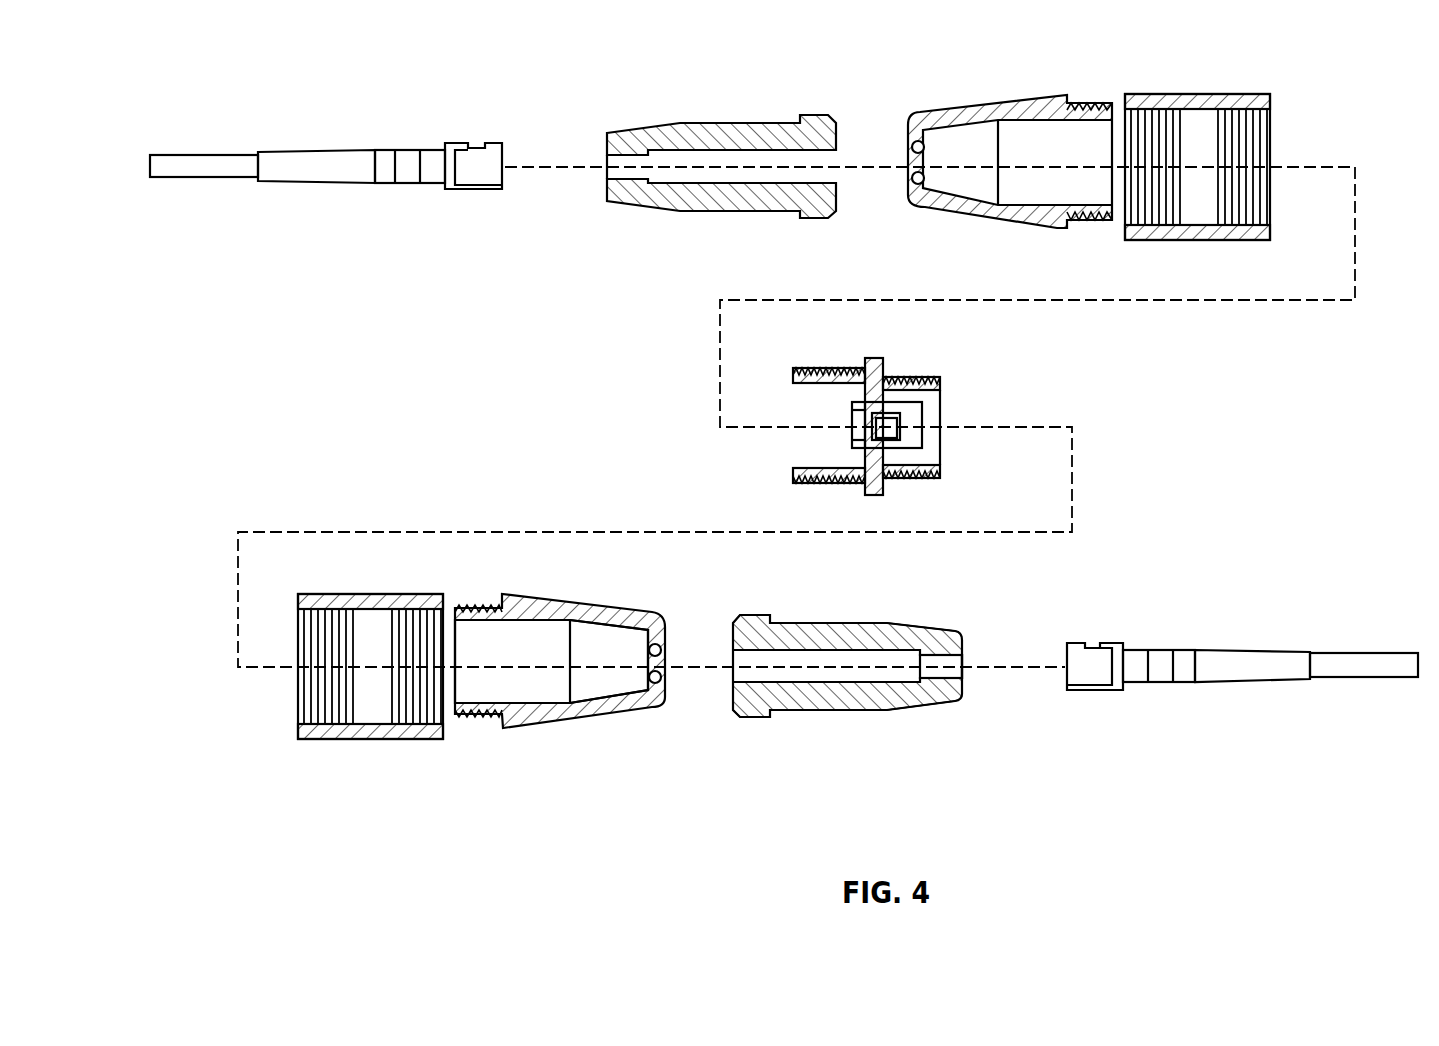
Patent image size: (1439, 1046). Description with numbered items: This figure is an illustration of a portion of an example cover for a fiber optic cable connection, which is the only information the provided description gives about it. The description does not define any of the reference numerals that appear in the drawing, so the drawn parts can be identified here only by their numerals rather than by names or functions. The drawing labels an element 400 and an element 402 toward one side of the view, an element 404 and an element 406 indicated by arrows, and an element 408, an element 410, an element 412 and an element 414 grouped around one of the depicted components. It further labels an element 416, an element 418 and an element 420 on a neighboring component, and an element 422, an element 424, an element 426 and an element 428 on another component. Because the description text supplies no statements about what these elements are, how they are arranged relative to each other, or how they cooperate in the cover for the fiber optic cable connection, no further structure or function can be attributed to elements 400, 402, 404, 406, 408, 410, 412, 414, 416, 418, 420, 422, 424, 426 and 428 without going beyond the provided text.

The fiber optic cable 400 is at (1240, 662).
The fiber optic connector 402 is at (1090, 662).
The connector assembly 404 is at (355, 472).
The coupling nut 406 is at (340, 622).
The nut bore 408 is at (395, 595).
The internal threads 410 is at (423, 595).
The internal threads 412 is at (360, 730).
The nut end wall 414 is at (427, 730).
The housing body 416 is at (560, 643).
The external threads 418 is at (550, 717).
The housing cavity 420 is at (590, 647).
The collet body 422 is at (858, 665).
The collet bore 424 is at (900, 687).
The collet wall 426 is at (835, 712).
The collet tip opening 428 is at (930, 663).